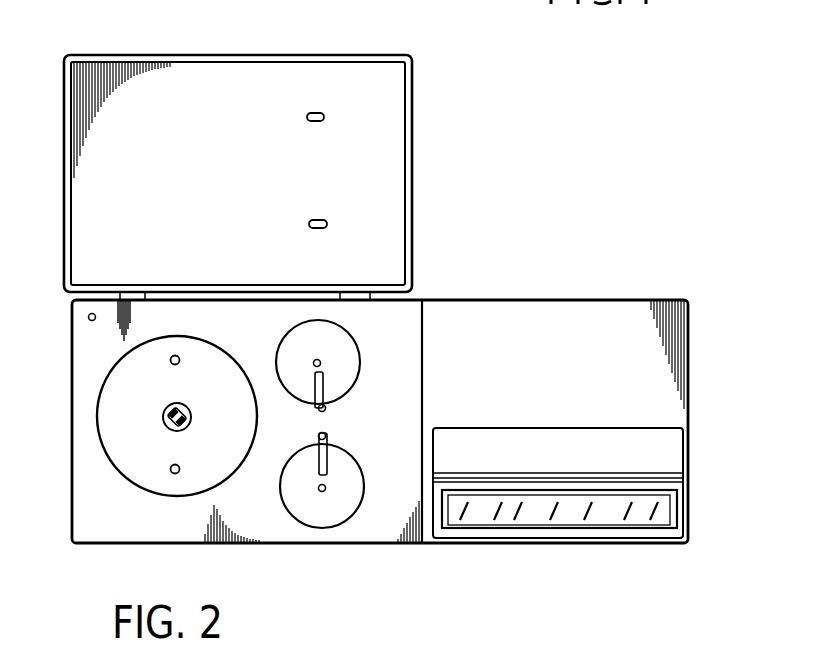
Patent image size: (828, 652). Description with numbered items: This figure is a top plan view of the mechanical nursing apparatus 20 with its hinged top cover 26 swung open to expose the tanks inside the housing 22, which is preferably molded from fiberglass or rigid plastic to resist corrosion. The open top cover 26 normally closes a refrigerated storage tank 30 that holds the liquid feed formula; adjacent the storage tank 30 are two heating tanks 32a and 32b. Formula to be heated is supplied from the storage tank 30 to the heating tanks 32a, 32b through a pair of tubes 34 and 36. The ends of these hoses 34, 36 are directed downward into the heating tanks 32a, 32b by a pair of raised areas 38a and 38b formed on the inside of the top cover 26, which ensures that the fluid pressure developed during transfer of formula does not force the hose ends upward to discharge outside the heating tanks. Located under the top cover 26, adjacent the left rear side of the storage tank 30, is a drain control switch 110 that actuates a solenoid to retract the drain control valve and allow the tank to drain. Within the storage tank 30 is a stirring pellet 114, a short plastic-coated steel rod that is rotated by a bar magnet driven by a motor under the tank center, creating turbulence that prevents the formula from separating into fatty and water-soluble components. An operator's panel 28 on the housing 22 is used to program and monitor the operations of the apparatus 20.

The nursing apparatus 20 is at (605, 286).
The housing 22 is at (650, 407).
The top cover 26 is at (192, 97).
The operator's panel 28 is at (637, 510).
The refrigerated storage tank 30 is at (142, 363).
The heating tank 32a is at (347, 497).
The heating tank 32b is at (344, 353).
The tube 34 is at (318, 457).
The tube 36 is at (312, 396).
The raised area 38a is at (320, 113).
The raised area 38b is at (318, 217).
The drain control switch 110 is at (88, 317).
The stirring pellet 114 is at (162, 418).